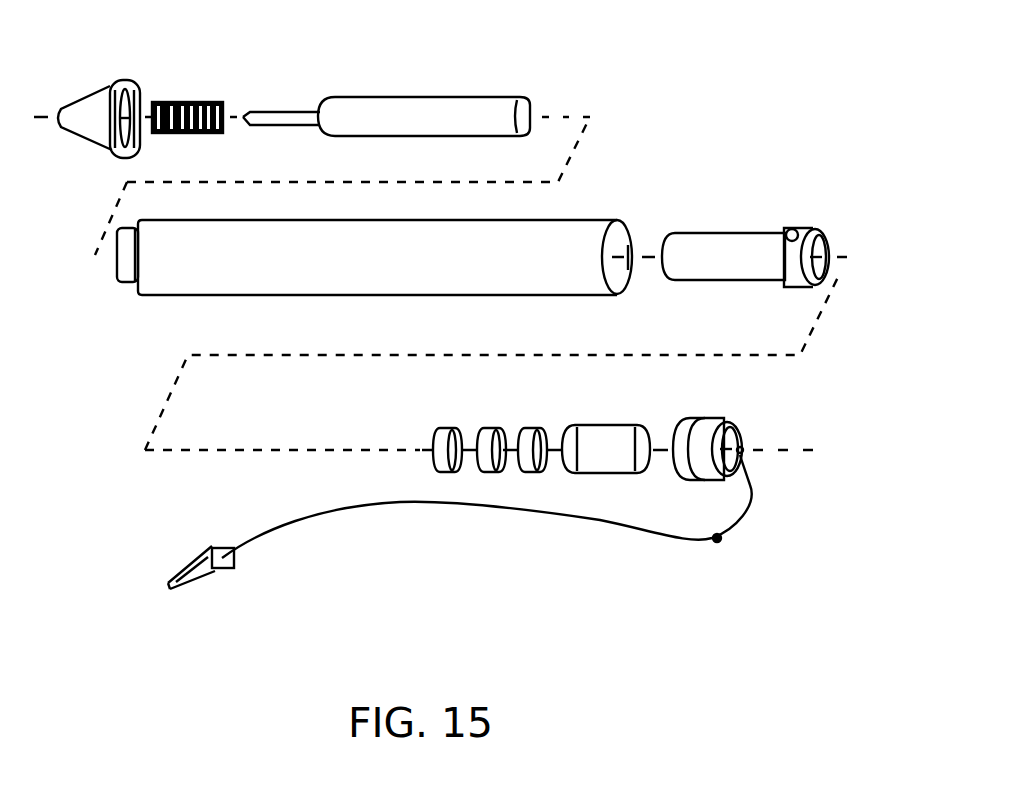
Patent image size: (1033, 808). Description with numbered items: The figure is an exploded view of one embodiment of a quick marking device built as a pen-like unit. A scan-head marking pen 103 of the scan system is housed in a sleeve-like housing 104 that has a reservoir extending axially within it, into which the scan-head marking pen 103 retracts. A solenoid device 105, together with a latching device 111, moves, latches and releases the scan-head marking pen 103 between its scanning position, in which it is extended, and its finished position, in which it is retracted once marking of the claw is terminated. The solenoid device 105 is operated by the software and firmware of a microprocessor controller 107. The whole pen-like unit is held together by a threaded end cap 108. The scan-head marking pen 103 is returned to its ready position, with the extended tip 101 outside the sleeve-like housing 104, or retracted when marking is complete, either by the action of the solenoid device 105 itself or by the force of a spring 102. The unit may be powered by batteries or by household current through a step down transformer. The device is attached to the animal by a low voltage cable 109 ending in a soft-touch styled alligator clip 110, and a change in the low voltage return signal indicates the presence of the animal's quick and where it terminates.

The extended tip 101 is at (128, 75).
The spring 102 is at (230, 95).
The scan-head marking pen 103 is at (457, 95).
The sleeve-like housing 104 is at (547, 212).
The solenoid device 105 is at (695, 230).
The latching device 111 is at (793, 228).
The microprocessor controller 107 is at (602, 425).
The threaded end cap 108 is at (717, 417).
The cable 109 is at (717, 540).
The alligator clip 110 is at (227, 565).